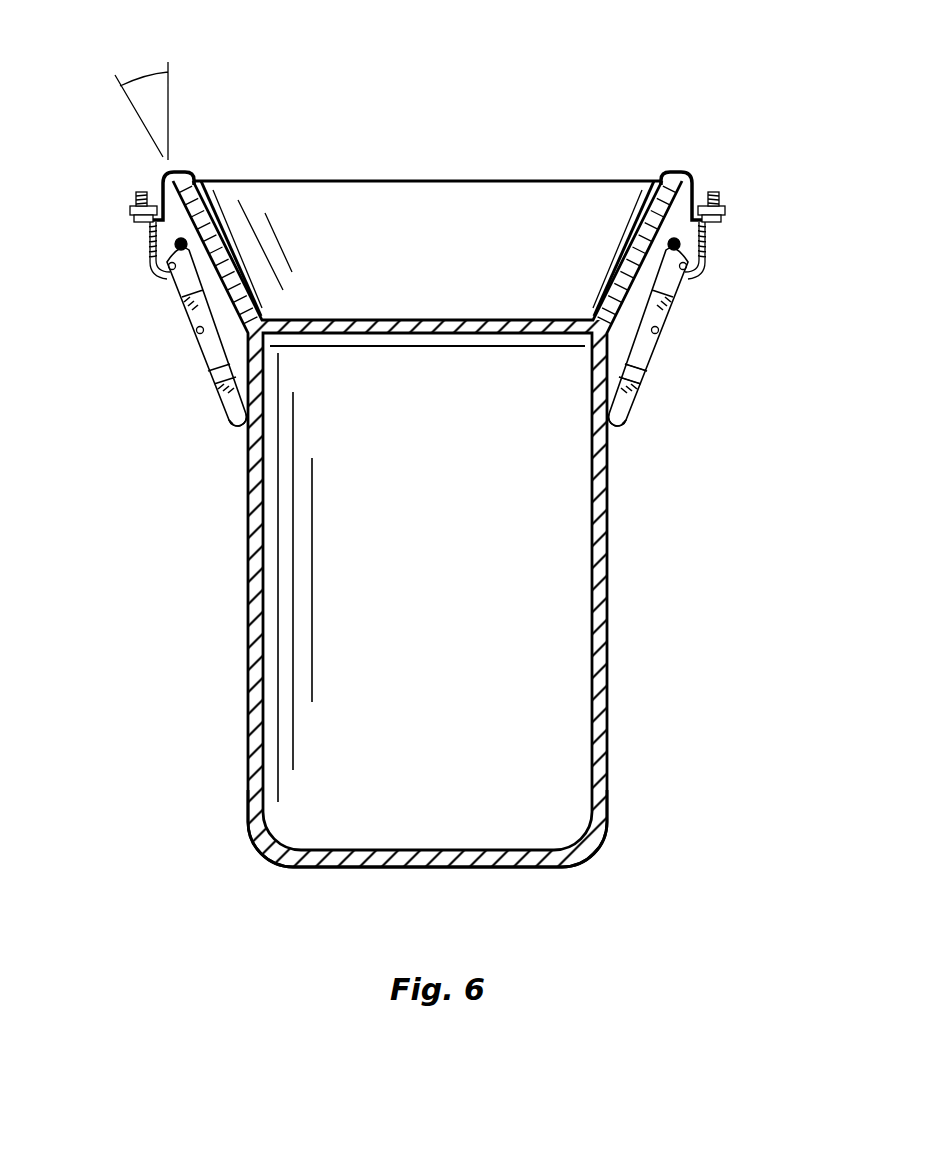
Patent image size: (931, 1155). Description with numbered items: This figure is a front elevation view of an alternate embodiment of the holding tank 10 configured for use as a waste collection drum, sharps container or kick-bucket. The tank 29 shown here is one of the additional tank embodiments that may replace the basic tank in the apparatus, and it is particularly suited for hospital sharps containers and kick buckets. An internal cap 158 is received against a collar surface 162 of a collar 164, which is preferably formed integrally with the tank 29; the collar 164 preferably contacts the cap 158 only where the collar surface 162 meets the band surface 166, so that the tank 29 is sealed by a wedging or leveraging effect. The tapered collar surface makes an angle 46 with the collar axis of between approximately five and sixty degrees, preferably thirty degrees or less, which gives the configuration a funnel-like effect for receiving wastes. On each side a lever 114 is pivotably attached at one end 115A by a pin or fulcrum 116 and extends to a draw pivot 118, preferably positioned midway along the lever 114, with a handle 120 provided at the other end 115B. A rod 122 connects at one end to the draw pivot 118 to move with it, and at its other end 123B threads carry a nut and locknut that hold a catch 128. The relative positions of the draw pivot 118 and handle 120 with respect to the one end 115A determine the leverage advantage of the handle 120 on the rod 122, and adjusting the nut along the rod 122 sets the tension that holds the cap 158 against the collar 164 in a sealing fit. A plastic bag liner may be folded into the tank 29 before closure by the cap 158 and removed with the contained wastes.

The holding tank 10 is at (439, 524).
The tank 29 is at (598, 848).
The angle 46 is at (140, 76).
The lever 114 is at (210, 372).
The one end 115A is at (168, 272).
The other end 115B is at (233, 425).
The fulcrum 116 is at (168, 258).
The draw pivot 118 is at (192, 330).
The handle 120 is at (232, 414).
The rod 122 is at (150, 240).
The other end 123B is at (135, 196).
The catch 128 is at (163, 173).
The internal cap 158 is at (605, 181).
The collar surface 162 is at (617, 275).
The collar 164 is at (645, 352).
The band surface 166 is at (643, 228).